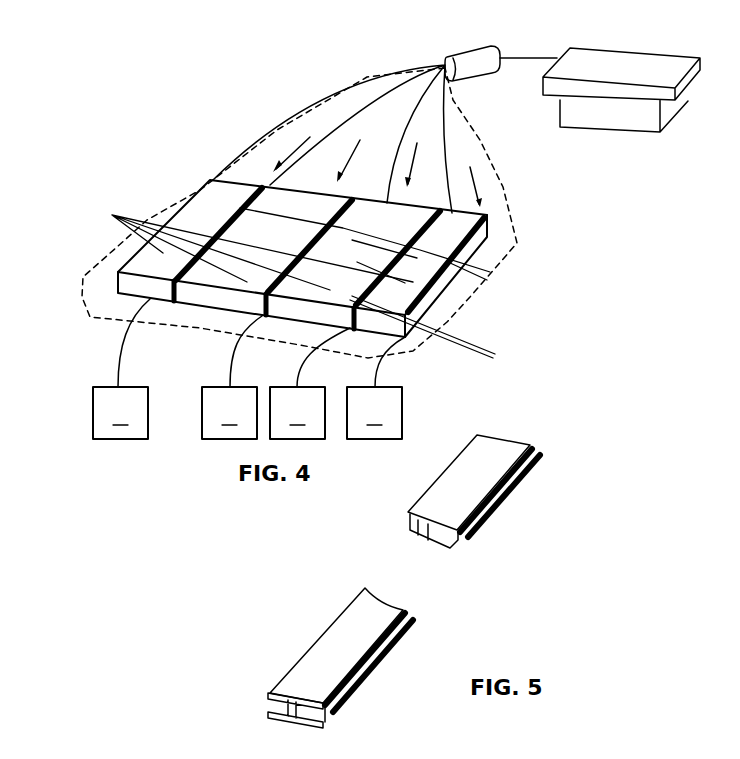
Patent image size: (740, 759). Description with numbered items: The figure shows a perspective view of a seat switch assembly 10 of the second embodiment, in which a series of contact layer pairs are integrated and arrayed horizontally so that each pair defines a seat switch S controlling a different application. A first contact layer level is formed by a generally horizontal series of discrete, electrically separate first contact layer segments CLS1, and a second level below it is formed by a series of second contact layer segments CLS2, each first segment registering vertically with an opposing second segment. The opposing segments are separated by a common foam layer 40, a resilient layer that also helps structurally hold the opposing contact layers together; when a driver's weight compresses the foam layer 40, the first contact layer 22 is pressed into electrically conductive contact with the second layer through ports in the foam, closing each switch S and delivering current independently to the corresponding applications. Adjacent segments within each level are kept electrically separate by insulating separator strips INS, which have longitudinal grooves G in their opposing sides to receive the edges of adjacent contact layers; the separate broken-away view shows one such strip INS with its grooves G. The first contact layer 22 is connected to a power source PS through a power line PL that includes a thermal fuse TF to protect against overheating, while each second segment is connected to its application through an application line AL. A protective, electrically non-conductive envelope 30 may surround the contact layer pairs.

In FIG. 4, the seat switch assembly 10 is at (122, 146).
In FIG. 4, the first contact layer 22 is at (205, 202).
In FIG. 4, the envelope 30 is at (470, 325).
In FIG. 4, the foam layer 40 is at (443, 292).
In FIG. 4, the first contact layer segments CLS1 is at (274, 248).
In FIG. 4, the second contact layer segments CLS2 is at (133, 278).
In FIG. 4, the insulating separator strips INS is at (173, 301).
In FIG. 5, the insulating separator strips INS is at (547, 425).
In FIG. 4, the application line AL is at (230, 378).
In FIG. 4, the seat switch S is at (377, 171).
In FIG. 4, the power line PL is at (440, 63).
In FIG. 4, the thermal fuse TF is at (488, 74).
In FIG. 4, the power source PS is at (618, 120).
In FIG. 5, the longitudinal grooves G is at (417, 527).